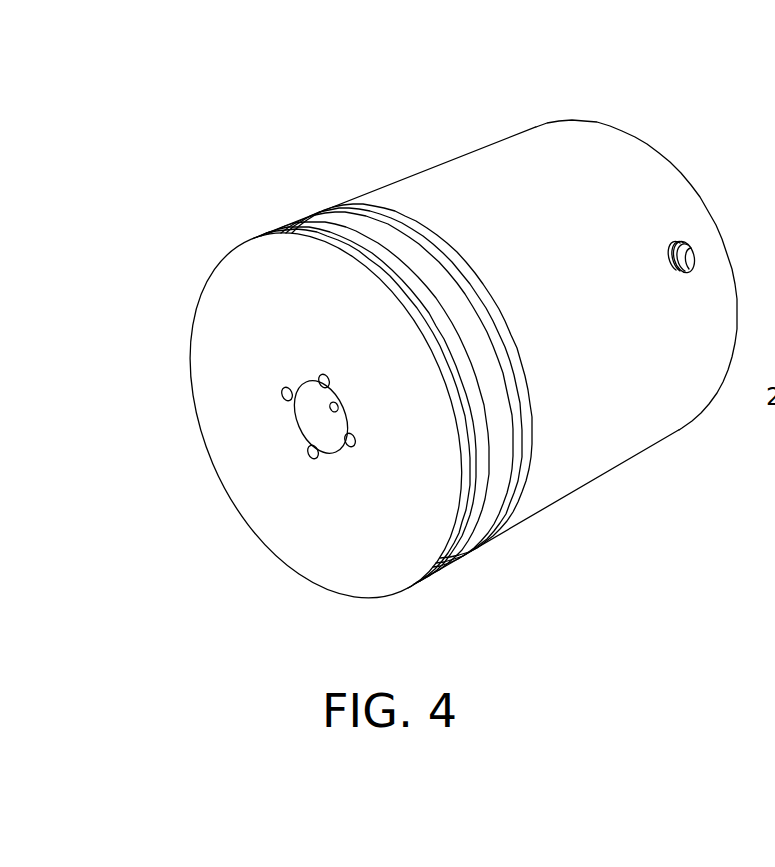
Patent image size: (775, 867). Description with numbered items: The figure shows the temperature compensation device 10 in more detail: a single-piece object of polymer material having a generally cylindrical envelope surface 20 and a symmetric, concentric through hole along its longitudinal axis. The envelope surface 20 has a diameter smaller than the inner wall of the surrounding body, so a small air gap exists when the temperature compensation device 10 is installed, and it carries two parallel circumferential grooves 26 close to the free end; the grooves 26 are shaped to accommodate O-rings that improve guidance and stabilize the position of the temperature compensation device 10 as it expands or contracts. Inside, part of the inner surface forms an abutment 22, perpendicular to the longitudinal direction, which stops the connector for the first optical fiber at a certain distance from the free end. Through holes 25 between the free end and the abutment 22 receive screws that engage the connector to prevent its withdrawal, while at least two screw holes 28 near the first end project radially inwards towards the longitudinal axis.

The temperature compensation device 10 is at (358, 142).
The cylindrical envelope surface 20 is at (632, 388).
The abutment 22 is at (317, 414).
The through holes 25 is at (318, 377).
The circumferential grooves 26 is at (447, 352).
The screw holes 28 is at (672, 258).